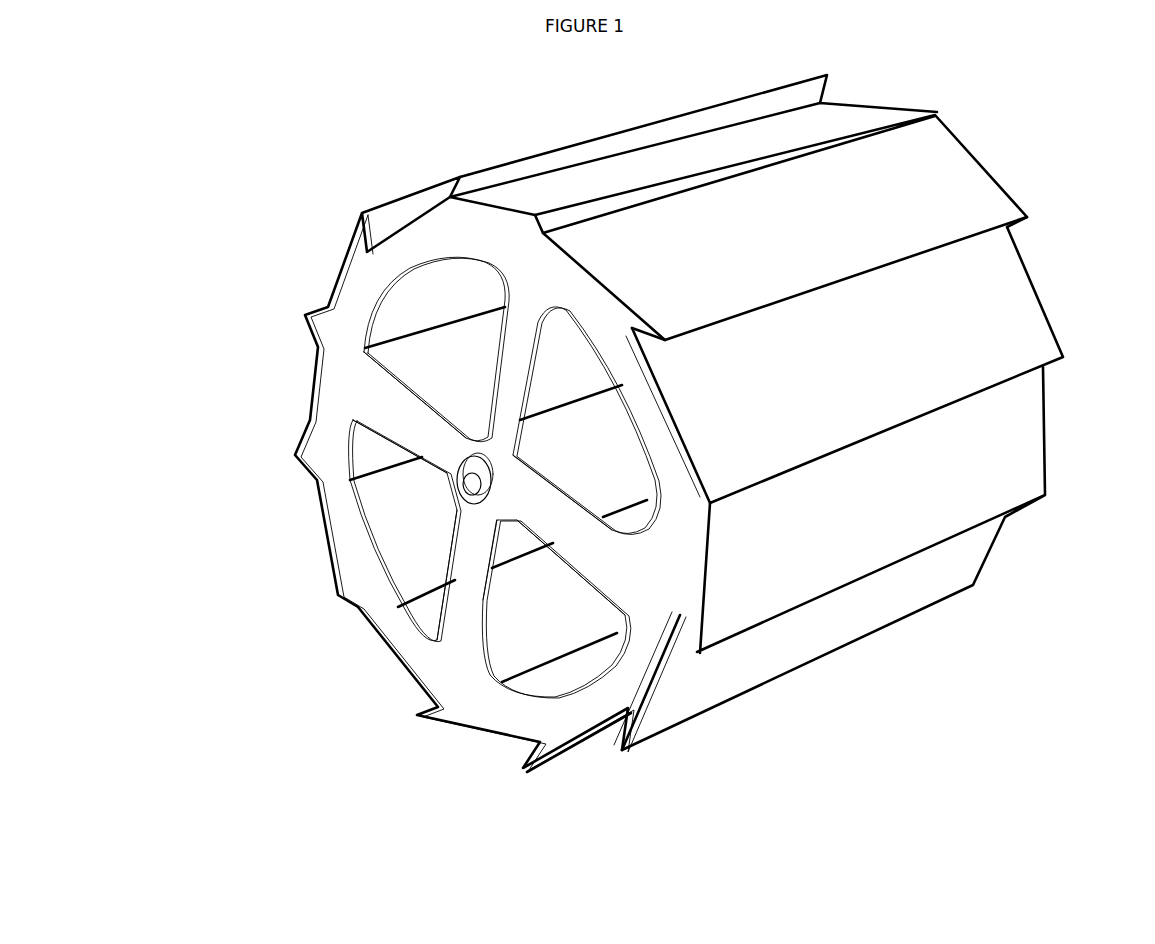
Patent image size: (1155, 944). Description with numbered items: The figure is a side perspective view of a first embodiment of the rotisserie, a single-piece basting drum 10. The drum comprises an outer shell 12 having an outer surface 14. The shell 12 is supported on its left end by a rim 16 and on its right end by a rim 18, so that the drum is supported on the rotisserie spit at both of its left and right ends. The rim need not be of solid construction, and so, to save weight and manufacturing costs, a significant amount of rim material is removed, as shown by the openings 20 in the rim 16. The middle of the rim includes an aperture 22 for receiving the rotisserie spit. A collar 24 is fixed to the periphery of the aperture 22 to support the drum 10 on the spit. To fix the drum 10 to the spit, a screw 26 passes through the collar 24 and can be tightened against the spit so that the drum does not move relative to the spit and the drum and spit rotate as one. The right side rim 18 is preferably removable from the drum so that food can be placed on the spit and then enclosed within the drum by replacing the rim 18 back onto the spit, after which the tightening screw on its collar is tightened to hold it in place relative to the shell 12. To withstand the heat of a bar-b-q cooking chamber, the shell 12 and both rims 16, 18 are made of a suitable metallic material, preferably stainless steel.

The single-piece basting drum 10 is at (338, 160).
The outer shell 12 is at (1042, 262).
The outer surface 14 is at (922, 172).
The rim 16 is at (336, 400).
The rim 18 is at (1111, 296).
The openings 20 is at (440, 294).
The aperture 22 is at (480, 487).
The collar 24 is at (500, 473).
The screw 26 is at (490, 447).